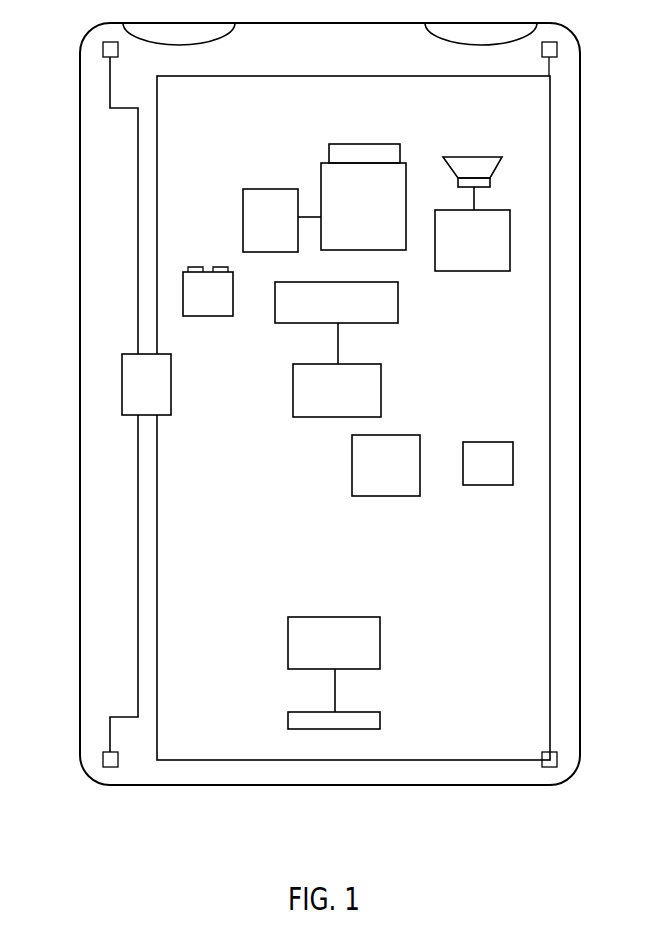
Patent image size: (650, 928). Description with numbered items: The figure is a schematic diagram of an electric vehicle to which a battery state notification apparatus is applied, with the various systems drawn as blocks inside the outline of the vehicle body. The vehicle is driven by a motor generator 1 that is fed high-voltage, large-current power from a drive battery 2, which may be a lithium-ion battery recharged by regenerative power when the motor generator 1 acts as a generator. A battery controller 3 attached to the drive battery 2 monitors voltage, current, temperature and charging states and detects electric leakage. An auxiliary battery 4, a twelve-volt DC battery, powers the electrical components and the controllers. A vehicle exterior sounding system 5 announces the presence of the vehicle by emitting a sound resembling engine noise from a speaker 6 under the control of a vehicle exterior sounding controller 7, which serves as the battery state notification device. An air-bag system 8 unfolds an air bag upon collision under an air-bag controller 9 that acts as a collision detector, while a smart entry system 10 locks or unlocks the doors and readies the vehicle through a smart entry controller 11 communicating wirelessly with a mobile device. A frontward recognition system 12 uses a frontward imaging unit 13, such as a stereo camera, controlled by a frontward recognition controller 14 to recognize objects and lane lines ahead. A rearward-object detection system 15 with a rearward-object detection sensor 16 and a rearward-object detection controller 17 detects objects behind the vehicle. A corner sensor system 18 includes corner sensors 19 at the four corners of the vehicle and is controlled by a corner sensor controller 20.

The motor generator 1 is at (268, 189).
The drive battery 2 is at (393, 251).
The battery controller 3 is at (385, 144).
The auxiliary battery 4 is at (207, 316).
The vehicle exterior sounding system 5 is at (503, 210).
The speaker 6 is at (502, 168).
The vehicle exterior sounding controller 7 is at (510, 255).
The air-bag system 8 is at (517, 479).
The air-bag controller 9 is at (486, 485).
The smart entry system 10 is at (353, 490).
The smart entry controller 11 is at (386, 496).
The frontward recognition system 12 is at (366, 349).
The frontward imaging unit 13 is at (398, 305).
The frontward recognition controller 14 is at (381, 390).
The rearward-object detection system 15 is at (373, 675).
The rearward-object detection sensor 16 is at (380, 718).
The rearward-object detection controller 17 is at (380, 636).
The corner sensor system 18 is at (113, 390).
The corner sensors 19 is at (103, 47).
The corner sensor controller 20 is at (171, 385).